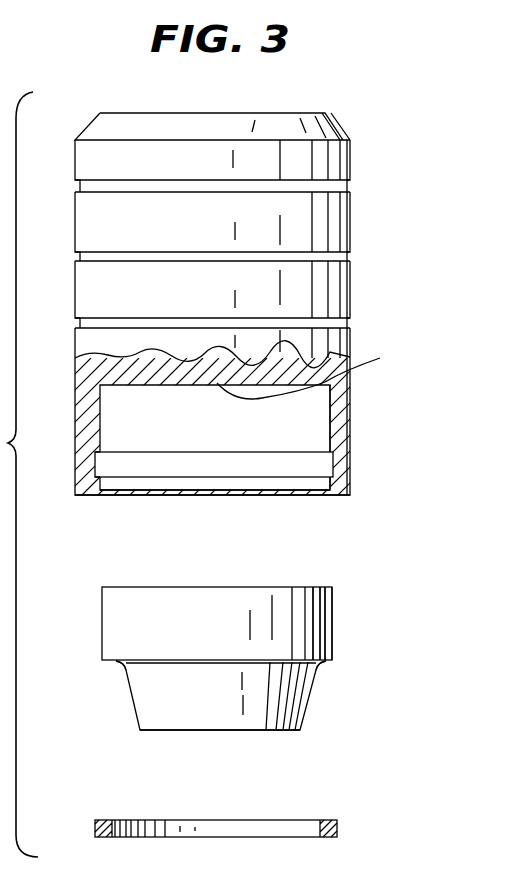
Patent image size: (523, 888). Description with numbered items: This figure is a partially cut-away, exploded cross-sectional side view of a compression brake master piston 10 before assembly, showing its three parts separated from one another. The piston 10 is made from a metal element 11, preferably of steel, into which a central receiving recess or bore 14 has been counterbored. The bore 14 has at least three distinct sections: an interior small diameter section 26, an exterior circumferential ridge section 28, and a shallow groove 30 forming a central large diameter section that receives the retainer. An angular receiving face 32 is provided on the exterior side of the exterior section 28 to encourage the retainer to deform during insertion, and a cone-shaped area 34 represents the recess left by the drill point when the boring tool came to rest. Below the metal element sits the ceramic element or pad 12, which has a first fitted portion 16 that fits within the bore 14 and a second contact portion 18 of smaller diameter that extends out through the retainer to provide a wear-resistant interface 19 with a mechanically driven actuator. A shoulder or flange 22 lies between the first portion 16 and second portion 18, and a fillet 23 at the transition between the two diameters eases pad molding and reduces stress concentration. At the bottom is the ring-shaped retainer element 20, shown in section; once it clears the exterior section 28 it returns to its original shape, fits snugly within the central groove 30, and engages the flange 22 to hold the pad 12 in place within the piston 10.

The compression brake master piston 10 is at (322, 96).
The metal element 11 is at (350, 222).
The ceramic element or pad 12 is at (98, 630).
The central receiving recess or bore 14 is at (118, 432).
The first fitted portion 16 is at (334, 624).
The second contact portion 18 is at (281, 733).
The wear-resistant interface / contact face 19 is at (213, 733).
The retainer element 20 is at (310, 820).
The shoulder or flange 22 is at (322, 662).
The fillet 23 is at (124, 662).
The interior small diameter section 26 is at (320, 424).
The exterior circumferential ridge section 28 is at (325, 497).
The shallow groove / central large diameter section 30 is at (333, 468).
The angular receiving face 32 is at (98, 488).
The cone-shaped area 34 is at (311, 370).